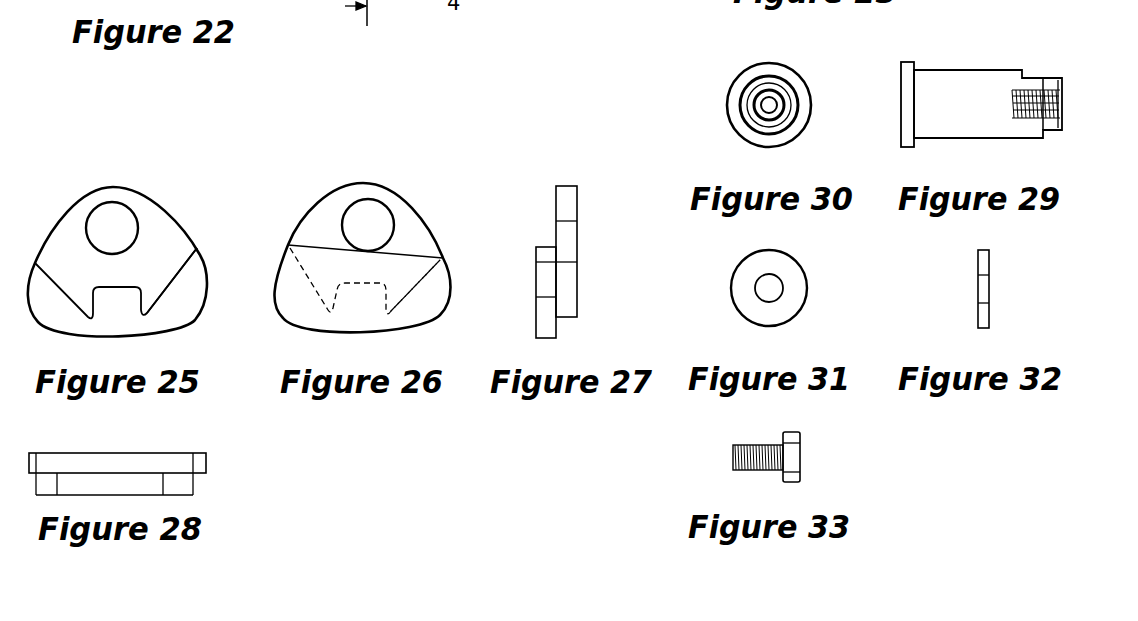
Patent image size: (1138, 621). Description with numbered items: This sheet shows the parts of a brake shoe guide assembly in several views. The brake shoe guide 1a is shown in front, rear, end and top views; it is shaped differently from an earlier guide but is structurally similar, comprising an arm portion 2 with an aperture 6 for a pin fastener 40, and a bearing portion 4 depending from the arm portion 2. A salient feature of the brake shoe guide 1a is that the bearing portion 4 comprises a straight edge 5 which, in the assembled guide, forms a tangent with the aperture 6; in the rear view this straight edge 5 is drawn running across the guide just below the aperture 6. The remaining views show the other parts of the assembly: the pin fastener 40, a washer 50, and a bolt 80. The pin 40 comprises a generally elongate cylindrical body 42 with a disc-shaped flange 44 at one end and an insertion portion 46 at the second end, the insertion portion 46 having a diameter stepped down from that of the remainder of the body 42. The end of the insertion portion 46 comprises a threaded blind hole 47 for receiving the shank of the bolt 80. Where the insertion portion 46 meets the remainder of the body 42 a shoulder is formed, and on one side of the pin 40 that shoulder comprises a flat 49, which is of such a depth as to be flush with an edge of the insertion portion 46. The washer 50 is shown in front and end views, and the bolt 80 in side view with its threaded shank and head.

In FIG. 25, the brake shoe guide 1a is at (178, 212).
In FIG. 26, the brake shoe guide 1a is at (420, 195).
In FIG. 27, the brake shoe guide 1a is at (587, 226).
In FIG. 28, the brake shoe guide 1a is at (214, 460).
In FIG. 25, the arm portion 2 is at (170, 243).
In FIG. 26, the arm portion 2 is at (423, 243).
In FIG. 25, the bearing portion 4 is at (185, 290).
In FIG. 26, the bearing portion 4 is at (437, 290).
In FIG. 26, the straight edge 5 is at (320, 247).
In FIG. 25, the aperture 6 is at (112, 227).
In FIG. 26, the aperture 6 is at (365, 227).
In FIG. 30, the pin fastener 40 is at (812, 78).
In FIG. 29, the pin fastener 40 is at (943, 68).
In FIG. 29, the body 42 is at (995, 140).
In FIG. 30, the flange 44 is at (729, 94).
In FIG. 29, the flange 44 is at (907, 118).
In FIG. 30, the insertion portion 46 is at (748, 125).
In FIG. 29, the insertion portion 46 is at (1053, 125).
In FIG. 30, the threaded blind hole 47 is at (768, 107).
In FIG. 29, the threaded blind hole 47 is at (1062, 103).
In FIG. 30, the flat 49 is at (766, 78).
In FIG. 29, the flat 49 is at (1032, 80).
In FIG. 31, the washer 50 is at (731, 278).
In FIG. 32, the washer 50 is at (992, 285).
In FIG. 33, the bolt 80 is at (806, 456).